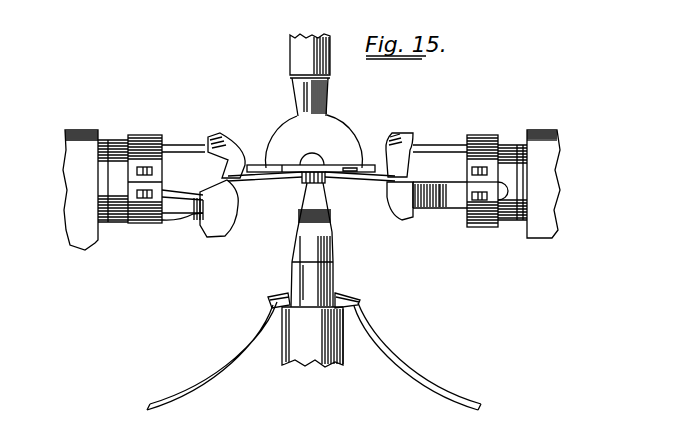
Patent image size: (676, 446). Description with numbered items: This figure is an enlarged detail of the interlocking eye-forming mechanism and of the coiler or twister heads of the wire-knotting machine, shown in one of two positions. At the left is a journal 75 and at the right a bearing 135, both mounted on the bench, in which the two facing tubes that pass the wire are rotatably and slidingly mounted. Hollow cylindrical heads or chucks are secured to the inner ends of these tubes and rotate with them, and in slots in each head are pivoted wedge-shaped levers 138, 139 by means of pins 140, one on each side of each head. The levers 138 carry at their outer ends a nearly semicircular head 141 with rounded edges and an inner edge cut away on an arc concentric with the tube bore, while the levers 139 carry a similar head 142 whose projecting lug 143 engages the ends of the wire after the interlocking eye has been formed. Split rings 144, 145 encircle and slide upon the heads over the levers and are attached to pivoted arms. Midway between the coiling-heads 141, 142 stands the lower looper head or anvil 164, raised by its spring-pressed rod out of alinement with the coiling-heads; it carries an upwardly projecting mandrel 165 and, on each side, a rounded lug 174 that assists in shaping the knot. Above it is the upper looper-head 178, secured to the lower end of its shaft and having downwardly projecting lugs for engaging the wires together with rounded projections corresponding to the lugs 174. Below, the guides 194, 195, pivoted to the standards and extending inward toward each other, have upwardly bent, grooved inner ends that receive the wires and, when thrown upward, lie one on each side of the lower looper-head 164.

The journal 75 is at (81, 129).
The bearing 135 is at (552, 132).
The lever 138 is at (178, 208).
The lever 139 is at (450, 193).
The pin 140 is at (335, 182).
The head 141 is at (227, 225).
The head 142 is at (223, 152).
The projecting lug 143 is at (393, 192).
The split ring 144 is at (143, 138).
The split ring 145 is at (487, 135).
The lower looper head or anvil 164 is at (310, 203).
The mandrel 165 is at (322, 164).
The lug 174 is at (306, 179).
The upper looper-head 178 is at (322, 117).
The guide 194 is at (181, 392).
The guide 195 is at (413, 378).